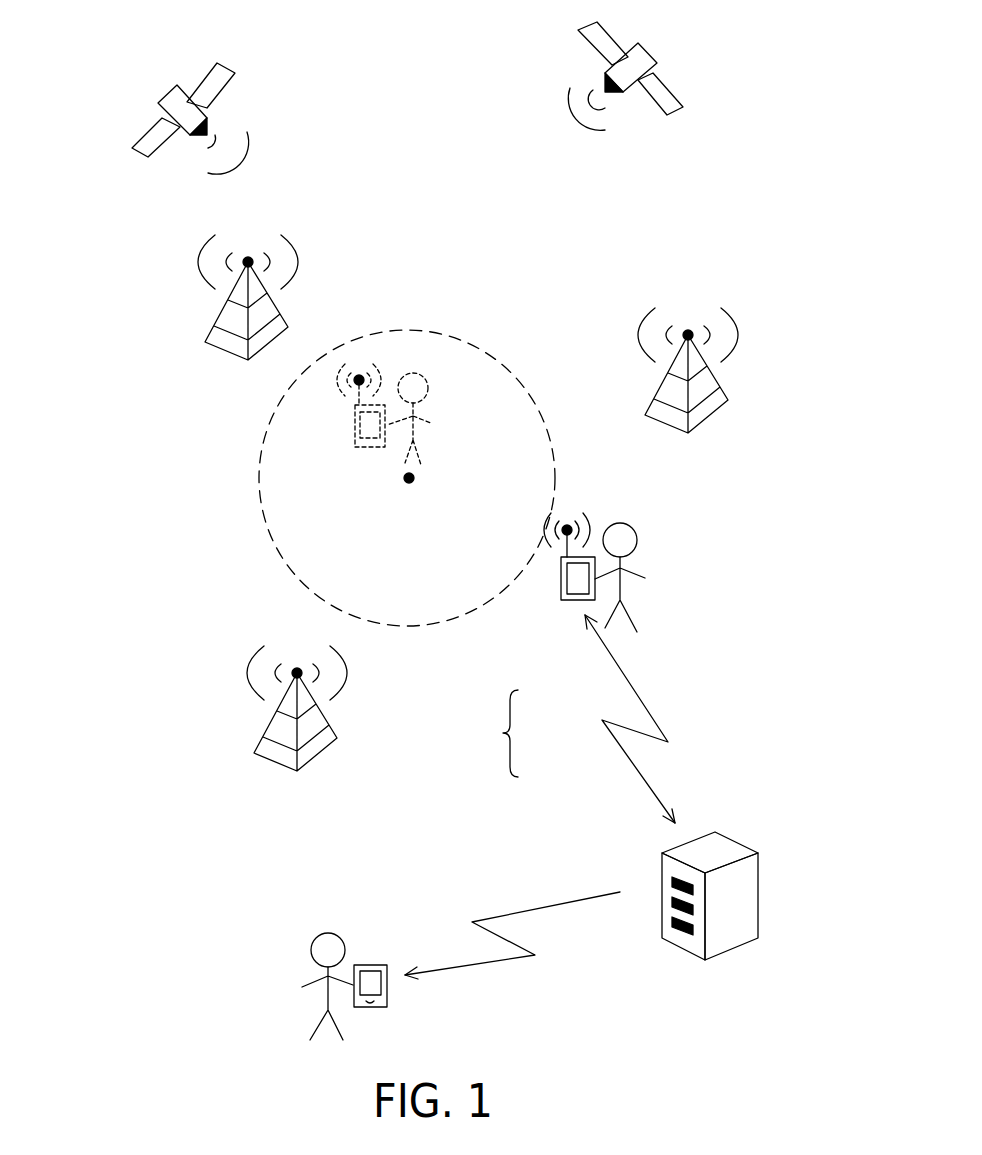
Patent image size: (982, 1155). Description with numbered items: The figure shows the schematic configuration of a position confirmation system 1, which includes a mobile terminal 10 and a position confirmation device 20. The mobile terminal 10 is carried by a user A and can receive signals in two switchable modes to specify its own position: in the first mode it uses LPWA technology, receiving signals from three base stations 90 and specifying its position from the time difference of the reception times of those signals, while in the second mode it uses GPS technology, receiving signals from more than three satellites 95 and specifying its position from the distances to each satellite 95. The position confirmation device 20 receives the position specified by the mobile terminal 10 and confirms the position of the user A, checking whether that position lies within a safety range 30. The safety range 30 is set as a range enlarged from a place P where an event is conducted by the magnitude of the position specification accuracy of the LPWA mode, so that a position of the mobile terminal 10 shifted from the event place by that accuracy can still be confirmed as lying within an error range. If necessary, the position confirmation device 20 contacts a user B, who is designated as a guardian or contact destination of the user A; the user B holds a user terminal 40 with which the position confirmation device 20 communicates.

The position confirmation system 1 is at (493, 746).
The mobile terminal 10 is at (570, 600).
The position confirmation device 20 is at (688, 840).
The safety range 30 is at (491, 345).
The user terminal 40 is at (387, 992).
The base station 90 is at (281, 313).
The satellite 95 is at (140, 138).
The user A is at (431, 423).
The user B is at (306, 980).
The place P is at (404, 482).